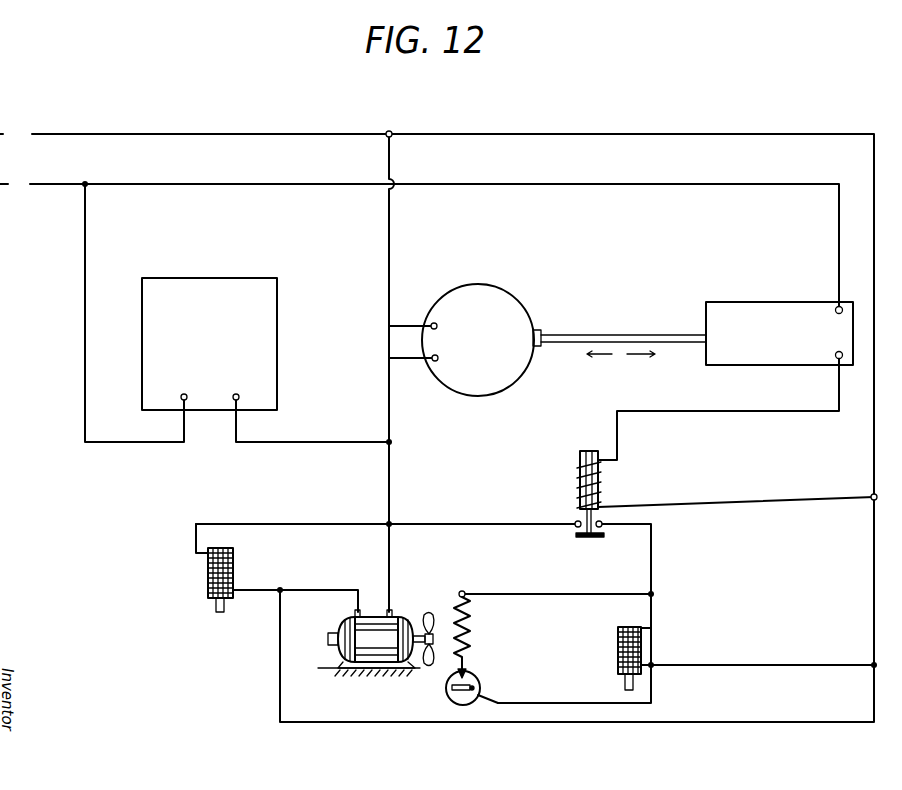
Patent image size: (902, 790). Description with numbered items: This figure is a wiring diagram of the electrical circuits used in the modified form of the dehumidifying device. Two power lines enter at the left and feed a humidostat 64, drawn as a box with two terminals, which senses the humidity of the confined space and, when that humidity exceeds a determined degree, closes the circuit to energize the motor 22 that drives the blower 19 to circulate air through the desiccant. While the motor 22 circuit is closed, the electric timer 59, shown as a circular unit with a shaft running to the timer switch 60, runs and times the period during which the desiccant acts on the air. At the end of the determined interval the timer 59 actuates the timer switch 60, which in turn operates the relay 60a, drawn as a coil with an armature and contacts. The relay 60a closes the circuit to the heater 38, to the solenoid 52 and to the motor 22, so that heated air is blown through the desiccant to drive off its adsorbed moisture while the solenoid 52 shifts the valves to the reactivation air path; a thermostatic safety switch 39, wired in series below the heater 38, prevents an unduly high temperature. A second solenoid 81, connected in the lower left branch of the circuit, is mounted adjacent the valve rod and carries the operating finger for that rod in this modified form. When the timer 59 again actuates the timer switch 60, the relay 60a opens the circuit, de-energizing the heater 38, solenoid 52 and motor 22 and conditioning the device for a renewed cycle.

The humidostat 64 is at (257, 350).
The timer mechanism 59 is at (509, 327).
The timer switch 60 is at (786, 347).
The relay 60a is at (580, 478).
The solenoid 81 is at (212, 580).
The motor 22 is at (350, 627).
The blower 19 is at (428, 614).
The heater 38 is at (468, 639).
The thermostatic safety switch 39 is at (472, 686).
The solenoid 52 is at (625, 650).